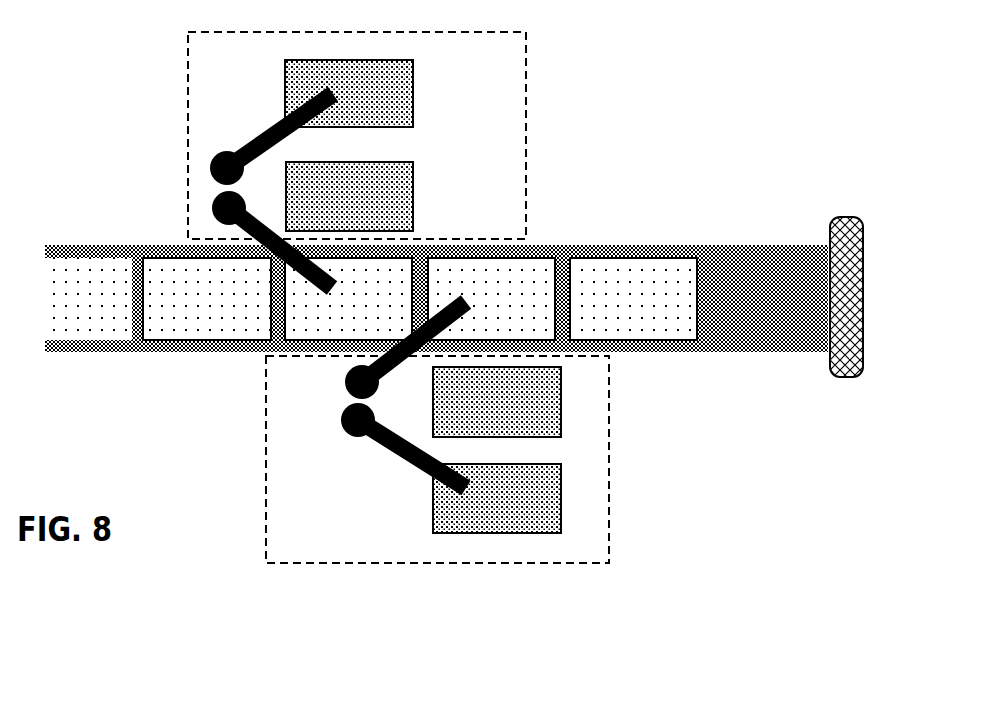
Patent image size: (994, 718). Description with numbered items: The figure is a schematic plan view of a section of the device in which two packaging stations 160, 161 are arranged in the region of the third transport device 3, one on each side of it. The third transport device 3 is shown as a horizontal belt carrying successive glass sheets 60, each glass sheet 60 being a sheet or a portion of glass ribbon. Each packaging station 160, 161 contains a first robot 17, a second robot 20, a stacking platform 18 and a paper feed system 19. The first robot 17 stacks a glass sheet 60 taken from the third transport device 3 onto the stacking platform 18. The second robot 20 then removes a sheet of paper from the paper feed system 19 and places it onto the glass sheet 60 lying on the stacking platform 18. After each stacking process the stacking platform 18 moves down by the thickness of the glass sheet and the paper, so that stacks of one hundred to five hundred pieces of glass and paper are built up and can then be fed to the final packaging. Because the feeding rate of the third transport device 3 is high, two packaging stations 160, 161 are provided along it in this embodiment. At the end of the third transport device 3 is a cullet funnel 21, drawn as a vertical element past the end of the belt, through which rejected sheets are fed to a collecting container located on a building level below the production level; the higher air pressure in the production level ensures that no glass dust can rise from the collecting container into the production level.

The third transport device 3 is at (83, 251).
The glass sheet 60 is at (163, 265).
The first robot 17 is at (212, 215).
The stacking platform 18 is at (413, 222).
The paper feed system 19 is at (285, 84).
The second robot 20 is at (214, 158).
The cullet funnel 21 is at (862, 266).
The packaging station 160 is at (526, 93).
The packaging station 161 is at (607, 482).